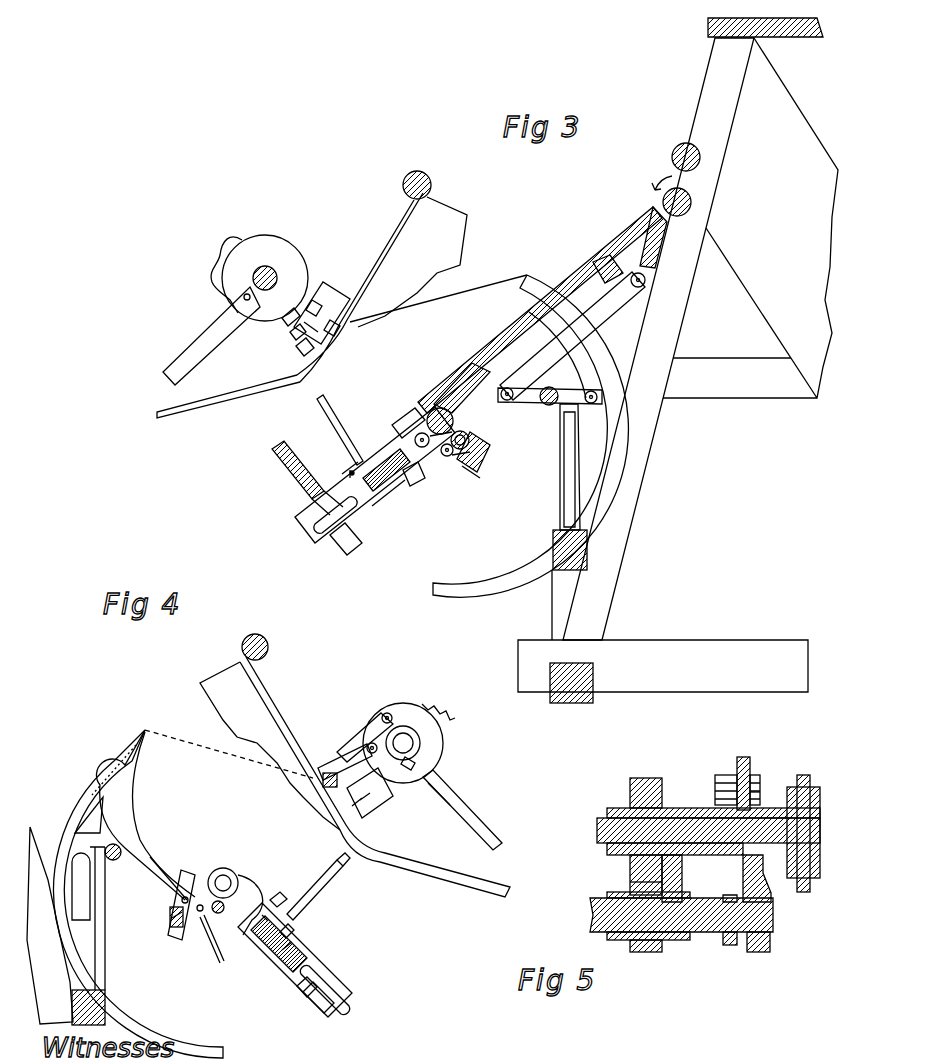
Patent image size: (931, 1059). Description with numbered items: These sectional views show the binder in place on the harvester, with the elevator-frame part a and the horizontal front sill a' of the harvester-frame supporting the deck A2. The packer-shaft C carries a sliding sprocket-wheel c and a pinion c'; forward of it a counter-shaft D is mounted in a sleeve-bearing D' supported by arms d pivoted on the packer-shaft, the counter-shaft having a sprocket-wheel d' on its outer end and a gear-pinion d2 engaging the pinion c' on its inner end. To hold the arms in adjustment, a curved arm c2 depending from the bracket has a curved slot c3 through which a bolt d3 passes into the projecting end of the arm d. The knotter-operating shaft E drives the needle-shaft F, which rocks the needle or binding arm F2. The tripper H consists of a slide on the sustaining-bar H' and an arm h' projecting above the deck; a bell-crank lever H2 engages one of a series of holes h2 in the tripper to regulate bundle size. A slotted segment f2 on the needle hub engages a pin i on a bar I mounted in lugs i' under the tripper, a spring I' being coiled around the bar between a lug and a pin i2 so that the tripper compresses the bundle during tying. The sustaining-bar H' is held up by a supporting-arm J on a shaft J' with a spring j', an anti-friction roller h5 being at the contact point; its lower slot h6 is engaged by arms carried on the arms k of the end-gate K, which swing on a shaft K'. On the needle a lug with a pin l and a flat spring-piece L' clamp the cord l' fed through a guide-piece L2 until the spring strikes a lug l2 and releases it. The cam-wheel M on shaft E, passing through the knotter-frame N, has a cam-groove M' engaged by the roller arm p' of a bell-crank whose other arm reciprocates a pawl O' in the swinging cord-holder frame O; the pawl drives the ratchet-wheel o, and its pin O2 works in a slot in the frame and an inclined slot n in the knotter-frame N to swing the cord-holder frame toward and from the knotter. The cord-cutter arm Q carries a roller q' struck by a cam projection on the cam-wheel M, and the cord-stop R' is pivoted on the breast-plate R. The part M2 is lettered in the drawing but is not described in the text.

In FIG. 3, the elevator-frame part a is at (750, 218).
In FIG. 3, the horizontal front sill a' is at (663, 671).
In FIG. 3, the deck A2 is at (470, 378).
In FIG. 3, the needle or binding arm F2 is at (530, 436).
In FIG. 4, the needle or binding arm F2 is at (125, 894).
In FIG. 3, the sprocket-wheel c is at (550, 415).
In FIG. 4, the sprocket-wheel c is at (112, 872).
In FIG. 3, the needle-shaft F is at (438, 407).
In FIG. 4, the needle-shaft F is at (222, 868).
In FIG. 3, the supporting-arm J is at (442, 457).
In FIG. 3, the shaft J' is at (481, 453).
In FIG. 3, the spring j' is at (475, 485).
In FIG. 3, the anti-friction roller h5 is at (428, 404).
In FIG. 3, the bell-crank lever H2 is at (400, 428).
In FIG. 4, the bell-crank lever H2 is at (277, 907).
In FIG. 3, the sustaining-bar H' is at (349, 481).
In FIG. 4, the sustaining-bar H' is at (321, 919).
In FIG. 3, the spring I' is at (386, 484).
In FIG. 4, the spring I' is at (274, 968).
In FIG. 3, the pin i2 is at (383, 506).
In FIG. 4, the pin i2 is at (305, 990).
In FIG. 3, the slot h6 is at (316, 523).
In FIG. 4, the slot h6 is at (352, 1005).
In FIG. 3, the bar I is at (346, 556).
In FIG. 4, the bar I is at (274, 944).
In FIG. 3, the lugs i' is at (398, 509).
In FIG. 4, the lugs i' is at (253, 951).
In FIG. 3, the end-gate K is at (274, 470).
In FIG. 3, the shaft K' is at (339, 457).
In FIG. 3, the arms k is at (300, 486).
In FIG. 3, the arm h' is at (340, 416).
In FIG. 4, the arm h' is at (318, 886).
In FIG. 3, the cam-wheel M is at (259, 267).
In FIG. 3, the knotter-operating shaft E is at (262, 270).
In FIG. 3, the breast-plate R is at (382, 276).
In FIG. 4, the breast-plate R is at (292, 748).
In FIG. 3, the cord-stop R' is at (232, 396).
In FIG. 4, the cord-stop R' is at (440, 875).
In FIG. 3, the right-angled arm Q is at (336, 305).
In FIG. 3, the anti-friction roller q' is at (321, 290).
In FIG. 3, the pawl O' is at (265, 323).
In FIG. 3, the ratchet-wheel o is at (291, 336).
In FIG. 3, the cord-holder frame O is at (279, 358).
In FIG. 4, the cord-holder frame O is at (382, 806).
In FIG. 4, the cam-groove M' is at (409, 728).
In FIG. 4, the arm p' is at (365, 722).
In FIG. 4, the knotter-frame N is at (357, 768).
In FIG. 4, the slot n is at (430, 780).
In FIG. 4, the ratchet segment M2 is at (470, 810).
In FIG. 4, the pin O2 is at (413, 763).
In FIG. 4, the slotted segment f2 is at (238, 882).
In FIG. 4, the flat spring-piece L' is at (177, 873).
In FIG. 4, the guide-piece L2 is at (197, 873).
In FIG. 4, the pin l is at (159, 883).
In FIG. 4, the lug l2 is at (178, 922).
In FIG. 4, the cord l' is at (212, 944).
In FIG. 4, the pin i is at (261, 971).
In FIG. 4, the tripper H is at (308, 960).
In FIG. 4, the series of holes h2 is at (290, 930).
In FIG. 5, the counter-shaft D is at (695, 830).
In FIG. 5, the sleeve-bearing D' is at (713, 819).
In FIG. 5, the gear-pinion d2 is at (652, 778).
In FIG. 5, the arms d is at (724, 811).
In FIG. 5, the curved slot c3 is at (737, 770).
In FIG. 5, the curved arm c2 is at (742, 773).
In FIG. 5, the bolt d3 is at (752, 790).
In FIG. 5, the sprocket-wheel d' is at (806, 825).
In FIG. 5, the packer-shaft C is at (590, 914).
In FIG. 5, the pinion c' is at (646, 959).